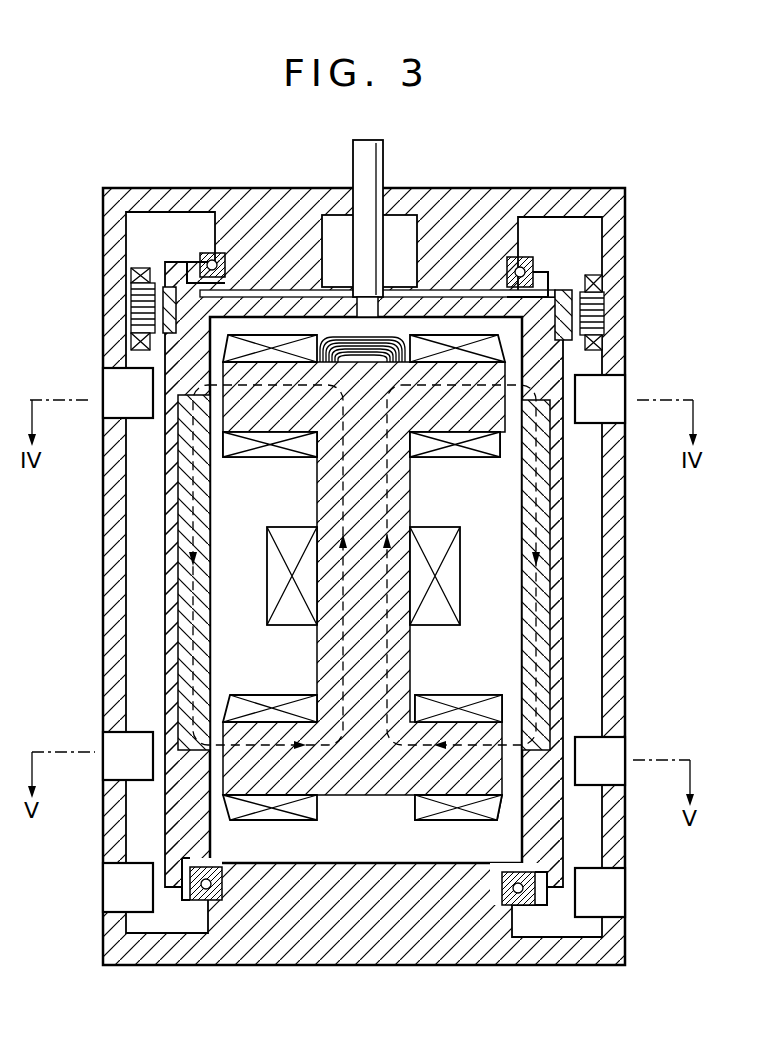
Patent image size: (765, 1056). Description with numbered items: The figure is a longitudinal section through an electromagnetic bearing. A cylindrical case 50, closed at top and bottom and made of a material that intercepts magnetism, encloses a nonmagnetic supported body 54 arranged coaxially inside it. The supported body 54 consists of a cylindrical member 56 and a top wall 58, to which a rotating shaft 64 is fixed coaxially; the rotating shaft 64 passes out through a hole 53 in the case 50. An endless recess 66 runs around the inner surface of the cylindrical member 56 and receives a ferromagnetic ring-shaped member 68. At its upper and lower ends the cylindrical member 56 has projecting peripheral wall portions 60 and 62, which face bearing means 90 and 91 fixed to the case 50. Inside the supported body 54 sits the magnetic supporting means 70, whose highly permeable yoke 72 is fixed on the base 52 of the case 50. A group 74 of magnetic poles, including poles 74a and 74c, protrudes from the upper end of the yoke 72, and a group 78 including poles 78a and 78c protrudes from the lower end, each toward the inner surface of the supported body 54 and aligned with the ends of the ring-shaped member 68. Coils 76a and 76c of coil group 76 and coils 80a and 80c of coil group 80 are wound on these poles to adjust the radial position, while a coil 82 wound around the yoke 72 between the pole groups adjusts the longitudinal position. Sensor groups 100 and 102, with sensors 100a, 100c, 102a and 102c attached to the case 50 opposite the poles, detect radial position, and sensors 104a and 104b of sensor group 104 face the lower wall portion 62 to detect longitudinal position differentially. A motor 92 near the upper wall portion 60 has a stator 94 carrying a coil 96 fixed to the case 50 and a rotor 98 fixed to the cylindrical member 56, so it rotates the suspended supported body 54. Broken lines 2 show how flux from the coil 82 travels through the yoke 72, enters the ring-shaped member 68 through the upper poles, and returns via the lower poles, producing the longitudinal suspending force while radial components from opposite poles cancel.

The broken lines 2 is at (338, 512).
The cylindrical case 50 is at (500, 200).
The base 52 is at (330, 835).
The hole 53 is at (348, 212).
The supported body 54 is at (582, 518).
The cylindrical member 56 is at (556, 565).
The top wall 58 is at (452, 305).
The upper projecting peripheral wall portion 60 is at (183, 272).
The lower projecting peripheral wall portion 62 is at (182, 893).
The rotating shaft 64 is at (385, 150).
The endless recess 66 is at (172, 630).
The ring-shaped member 68 is at (207, 535).
The magnetic supporting means 70 is at (368, 594).
The yoke 72 is at (330, 655).
The upper magnetic pole group 74 is at (520, 435).
The magnetic pole 74a is at (286, 452).
The magnetic pole 74c is at (440, 452).
The upper coil group 76 is at (493, 492).
The coil 76a is at (242, 468).
The coil 76c is at (470, 470).
The lower magnetic pole group 78 is at (432, 715).
The magnetic pole 78a is at (255, 712).
The magnetic pole 78c is at (500, 800).
The lower coil group 80 is at (470, 700).
The coil 80a is at (240, 808).
The coil 80c is at (448, 812).
The coil 82 is at (268, 602).
The bearing means 90 is at (524, 262).
The bearing means 91 is at (526, 900).
The motor 92 is at (630, 290).
The stator 94 is at (598, 312).
The coil 96 is at (608, 283).
The rotor 98 is at (566, 290).
The upper sensor group 100 is at (100, 345).
The sensor 100a is at (115, 378).
The sensor 100c is at (612, 390).
The lower sensor group 102 is at (94, 758).
The sensor 102a is at (113, 745).
The sensor 102c is at (610, 750).
The longitudinal sensor group 104 is at (89, 912).
The sensor 104a is at (113, 890).
The sensor 104b is at (612, 900).